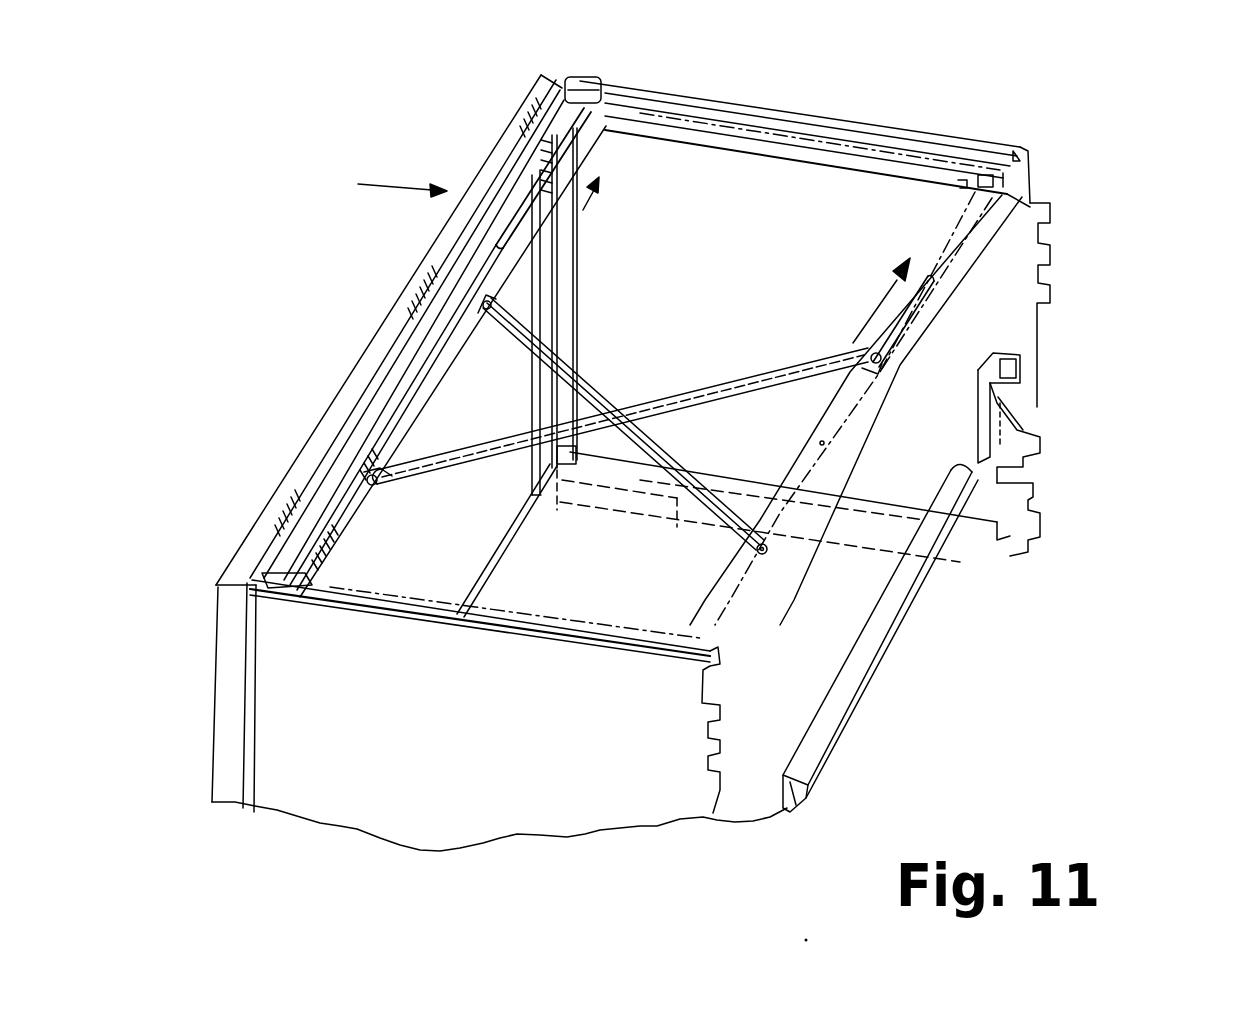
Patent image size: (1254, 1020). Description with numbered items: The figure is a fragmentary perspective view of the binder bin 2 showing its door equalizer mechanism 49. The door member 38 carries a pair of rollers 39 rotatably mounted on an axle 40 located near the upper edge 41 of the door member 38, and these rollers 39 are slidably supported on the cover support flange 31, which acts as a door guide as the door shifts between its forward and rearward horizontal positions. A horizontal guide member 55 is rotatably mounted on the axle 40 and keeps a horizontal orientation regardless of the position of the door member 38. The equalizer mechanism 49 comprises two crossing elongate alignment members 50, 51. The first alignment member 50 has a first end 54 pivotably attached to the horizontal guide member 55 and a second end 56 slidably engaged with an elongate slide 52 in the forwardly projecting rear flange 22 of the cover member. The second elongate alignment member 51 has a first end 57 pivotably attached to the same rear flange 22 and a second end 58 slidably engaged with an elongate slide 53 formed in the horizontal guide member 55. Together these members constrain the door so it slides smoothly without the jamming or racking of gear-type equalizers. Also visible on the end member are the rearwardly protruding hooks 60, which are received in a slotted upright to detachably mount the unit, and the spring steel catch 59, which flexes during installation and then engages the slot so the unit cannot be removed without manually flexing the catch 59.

The binder bin 2 is at (1103, 86).
The forwardly projecting rear flange 22 is at (745, 618).
The cover support flange 31 is at (862, 158).
The door member 38 is at (330, 402).
The rollers 39 is at (599, 90).
The axle 40 is at (533, 183).
The upper edge 41 is at (362, 378).
The door equalizer mechanism 49 is at (898, 452).
The first alignment member 50 is at (783, 355).
The second elongate alignment member 51 is at (707, 507).
The elongate slide 52 is at (930, 307).
The elongate slide 53 is at (507, 259).
The first end 54 is at (366, 482).
The horizontal guide member 55 is at (347, 512).
The second end 56 is at (880, 362).
The first end 57 is at (766, 553).
The second end 58 is at (480, 302).
The catch 59 is at (1018, 422).
The hooks 60 is at (1041, 512).